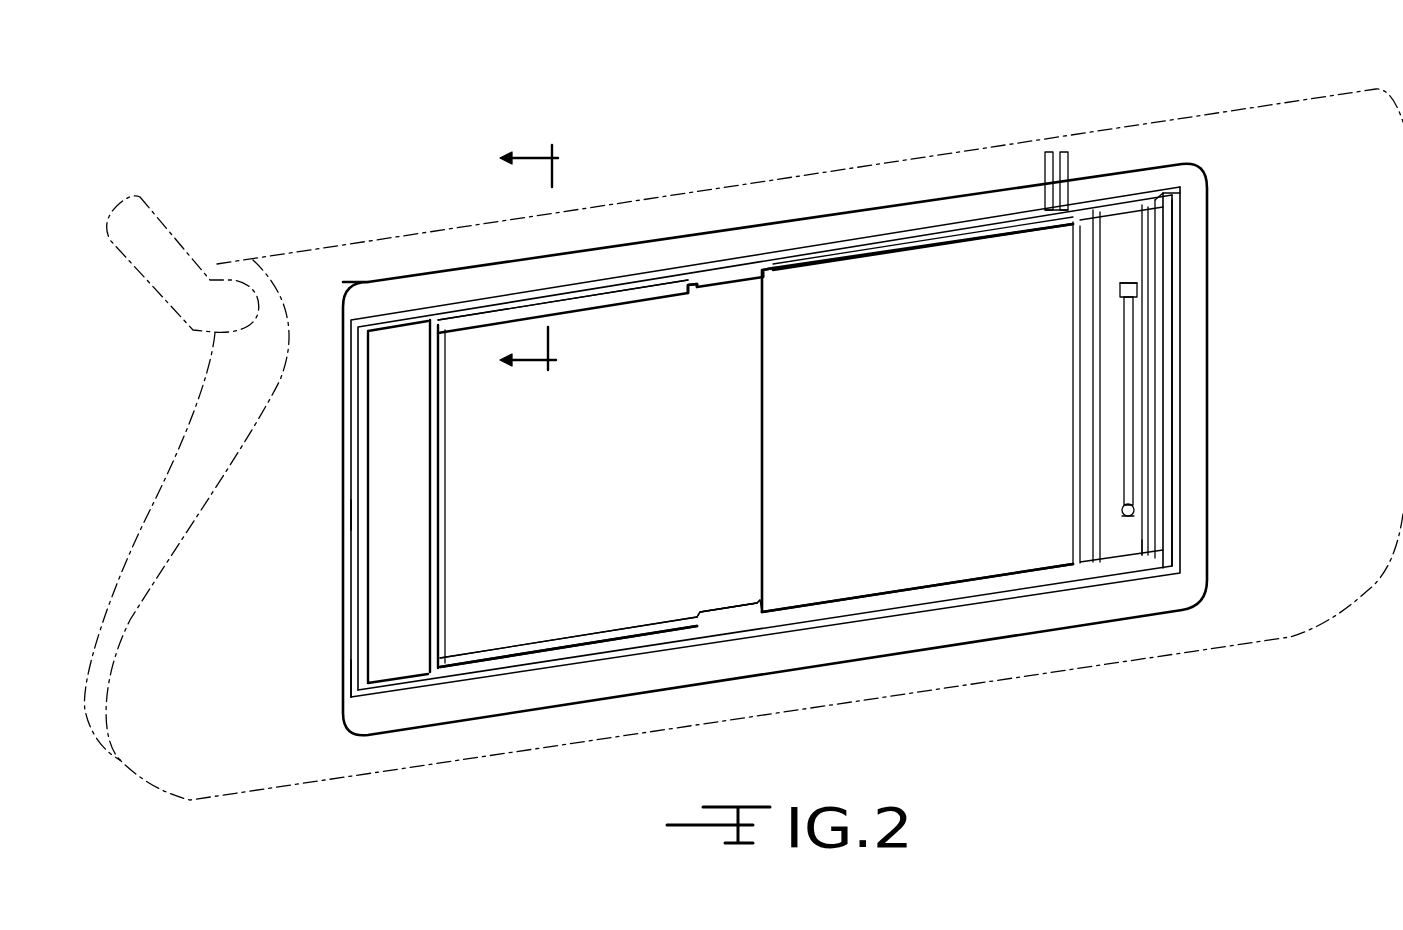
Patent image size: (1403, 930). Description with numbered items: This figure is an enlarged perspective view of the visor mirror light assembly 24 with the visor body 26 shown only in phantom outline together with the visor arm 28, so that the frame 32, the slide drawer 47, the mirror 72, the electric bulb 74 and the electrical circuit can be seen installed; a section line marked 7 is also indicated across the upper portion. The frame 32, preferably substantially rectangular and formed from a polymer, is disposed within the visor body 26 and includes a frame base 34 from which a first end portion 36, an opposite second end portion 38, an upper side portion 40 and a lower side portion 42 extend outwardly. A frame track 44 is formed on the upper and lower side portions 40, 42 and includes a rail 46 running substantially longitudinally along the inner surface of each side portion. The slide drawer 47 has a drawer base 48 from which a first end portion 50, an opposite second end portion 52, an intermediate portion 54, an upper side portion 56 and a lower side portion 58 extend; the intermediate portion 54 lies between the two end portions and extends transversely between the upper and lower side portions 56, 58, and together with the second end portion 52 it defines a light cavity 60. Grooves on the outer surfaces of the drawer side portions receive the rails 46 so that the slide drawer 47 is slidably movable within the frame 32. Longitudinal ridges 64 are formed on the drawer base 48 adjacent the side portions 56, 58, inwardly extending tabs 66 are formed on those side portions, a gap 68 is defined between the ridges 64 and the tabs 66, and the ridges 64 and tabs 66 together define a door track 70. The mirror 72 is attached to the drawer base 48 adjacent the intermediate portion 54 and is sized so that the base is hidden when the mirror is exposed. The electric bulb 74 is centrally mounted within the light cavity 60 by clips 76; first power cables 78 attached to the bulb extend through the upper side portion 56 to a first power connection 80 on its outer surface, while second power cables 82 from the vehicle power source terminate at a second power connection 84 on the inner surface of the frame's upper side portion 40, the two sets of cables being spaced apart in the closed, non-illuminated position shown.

The section line 7- 7 is at (537, 256).
The visor mirror light assembly 24 is at (644, 188).
The visor body 26 is at (317, 267).
The visor arm 28 is at (160, 200).
The frame 32 is at (404, 740).
The frame base 34 is at (393, 570).
The first end portion 36 is at (340, 457).
The second end portion 38 is at (1170, 556).
The upper side portion 40 is at (390, 318).
The lower side portion 42 is at (545, 672).
The frame track 44 is at (390, 664).
The rail 46 is at (402, 332).
The slide drawer 47 is at (422, 497).
The drawer base 48 is at (647, 612).
The first end portion 50 is at (445, 452).
The second end portion 52 is at (1147, 540).
The intermediate portion 54 is at (1075, 300).
The upper side portion 56 is at (845, 250).
The lower side portion 58 is at (840, 608).
The light cavity 60 is at (1103, 233).
The ridges 64 is at (617, 300).
The tabs 66 is at (742, 277).
The gap 68 is at (700, 620).
The door track 70 is at (685, 292).
The mirror 72 is at (962, 409).
The electric bulb 74 is at (1125, 408).
The clips 76 is at (1122, 492).
The first power cables 78 is at (1175, 215).
The first power connection 80 is at (1140, 250).
The second power cables 82 is at (1063, 152).
The second power connection 84 is at (1057, 207).